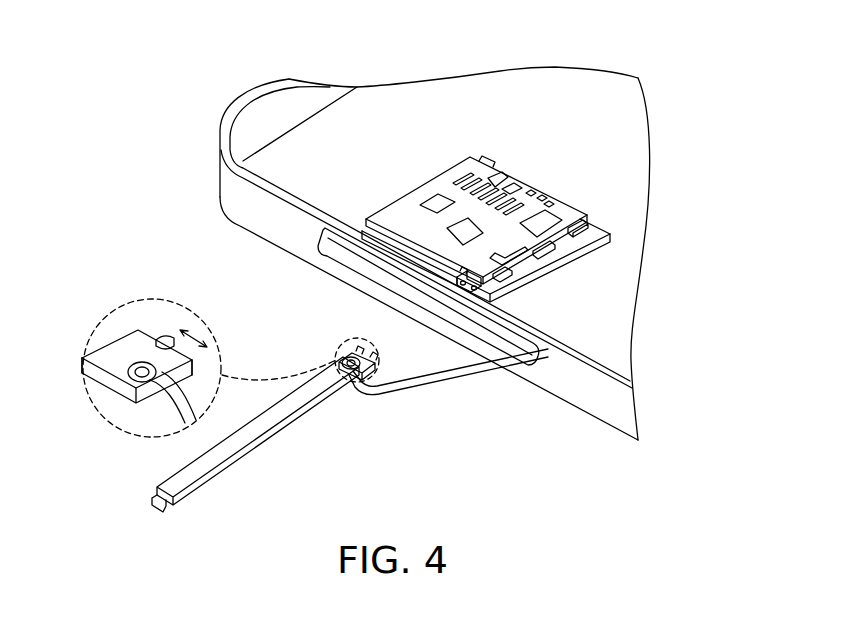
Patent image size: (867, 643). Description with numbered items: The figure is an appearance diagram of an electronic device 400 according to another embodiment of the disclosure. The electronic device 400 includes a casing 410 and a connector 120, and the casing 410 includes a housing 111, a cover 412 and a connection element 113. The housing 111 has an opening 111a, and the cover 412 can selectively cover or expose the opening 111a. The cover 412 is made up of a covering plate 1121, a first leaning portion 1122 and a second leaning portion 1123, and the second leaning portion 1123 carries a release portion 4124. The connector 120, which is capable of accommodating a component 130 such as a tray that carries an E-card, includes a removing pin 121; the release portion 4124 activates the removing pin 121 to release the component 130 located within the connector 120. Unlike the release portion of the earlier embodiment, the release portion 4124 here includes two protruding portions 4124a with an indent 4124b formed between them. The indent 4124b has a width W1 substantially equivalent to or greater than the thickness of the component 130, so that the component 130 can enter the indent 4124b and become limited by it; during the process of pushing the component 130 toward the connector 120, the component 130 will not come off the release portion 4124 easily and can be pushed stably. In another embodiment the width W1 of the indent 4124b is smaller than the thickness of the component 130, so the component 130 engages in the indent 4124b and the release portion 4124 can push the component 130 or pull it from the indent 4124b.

The electronic device 400 is at (133, 60).
The casing 410 is at (505, 393).
The cover 412 is at (233, 380).
The housing 111 is at (435, 253).
The opening 111a is at (360, 255).
The connection element 113 is at (415, 385).
The connector 120 is at (437, 197).
The removing pin 121 is at (467, 290).
The component 130 is at (384, 236).
The covering plate 1121 is at (277, 418).
The first leaning portion 1122 is at (180, 514).
The second leaning portion 1123 is at (349, 388).
The release portion 4124 is at (158, 330).
The protruding portions 4124a is at (135, 328).
The indent 4124b is at (158, 332).
The width W1 is at (192, 327).